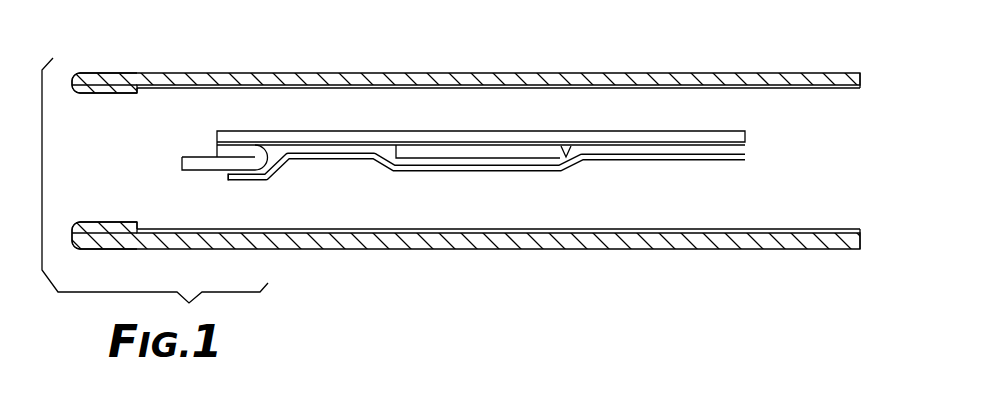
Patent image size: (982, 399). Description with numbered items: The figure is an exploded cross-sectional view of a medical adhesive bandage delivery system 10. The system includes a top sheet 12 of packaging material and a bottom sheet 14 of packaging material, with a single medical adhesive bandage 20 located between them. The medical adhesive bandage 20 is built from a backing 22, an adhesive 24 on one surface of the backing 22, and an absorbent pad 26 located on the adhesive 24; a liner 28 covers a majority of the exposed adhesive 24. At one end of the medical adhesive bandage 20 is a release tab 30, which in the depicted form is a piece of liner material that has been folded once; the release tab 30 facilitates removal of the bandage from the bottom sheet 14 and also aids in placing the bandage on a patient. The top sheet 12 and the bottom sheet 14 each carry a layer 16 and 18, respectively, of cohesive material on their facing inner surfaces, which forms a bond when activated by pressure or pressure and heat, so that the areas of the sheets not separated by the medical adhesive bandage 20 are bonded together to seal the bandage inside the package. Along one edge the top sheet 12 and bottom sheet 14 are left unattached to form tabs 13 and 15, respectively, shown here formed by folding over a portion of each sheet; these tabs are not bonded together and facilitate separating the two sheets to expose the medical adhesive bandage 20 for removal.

The medical adhesive bandage delivery system 10 is at (772, 56).
The top sheet 12 is at (623, 74).
The tab 13 is at (86, 94).
The bottom sheet 14 is at (698, 243).
The tab 15 is at (87, 222).
The layer of cohesive material 16 is at (820, 89).
The layer of cohesive material 18 is at (833, 231).
The medical adhesive bandage 20 is at (752, 138).
The backing 22 is at (318, 134).
The adhesive 24 is at (217, 146).
The absorbent pad 26 is at (470, 154).
The liner 28 is at (617, 154).
The release tab 30 is at (191, 157).